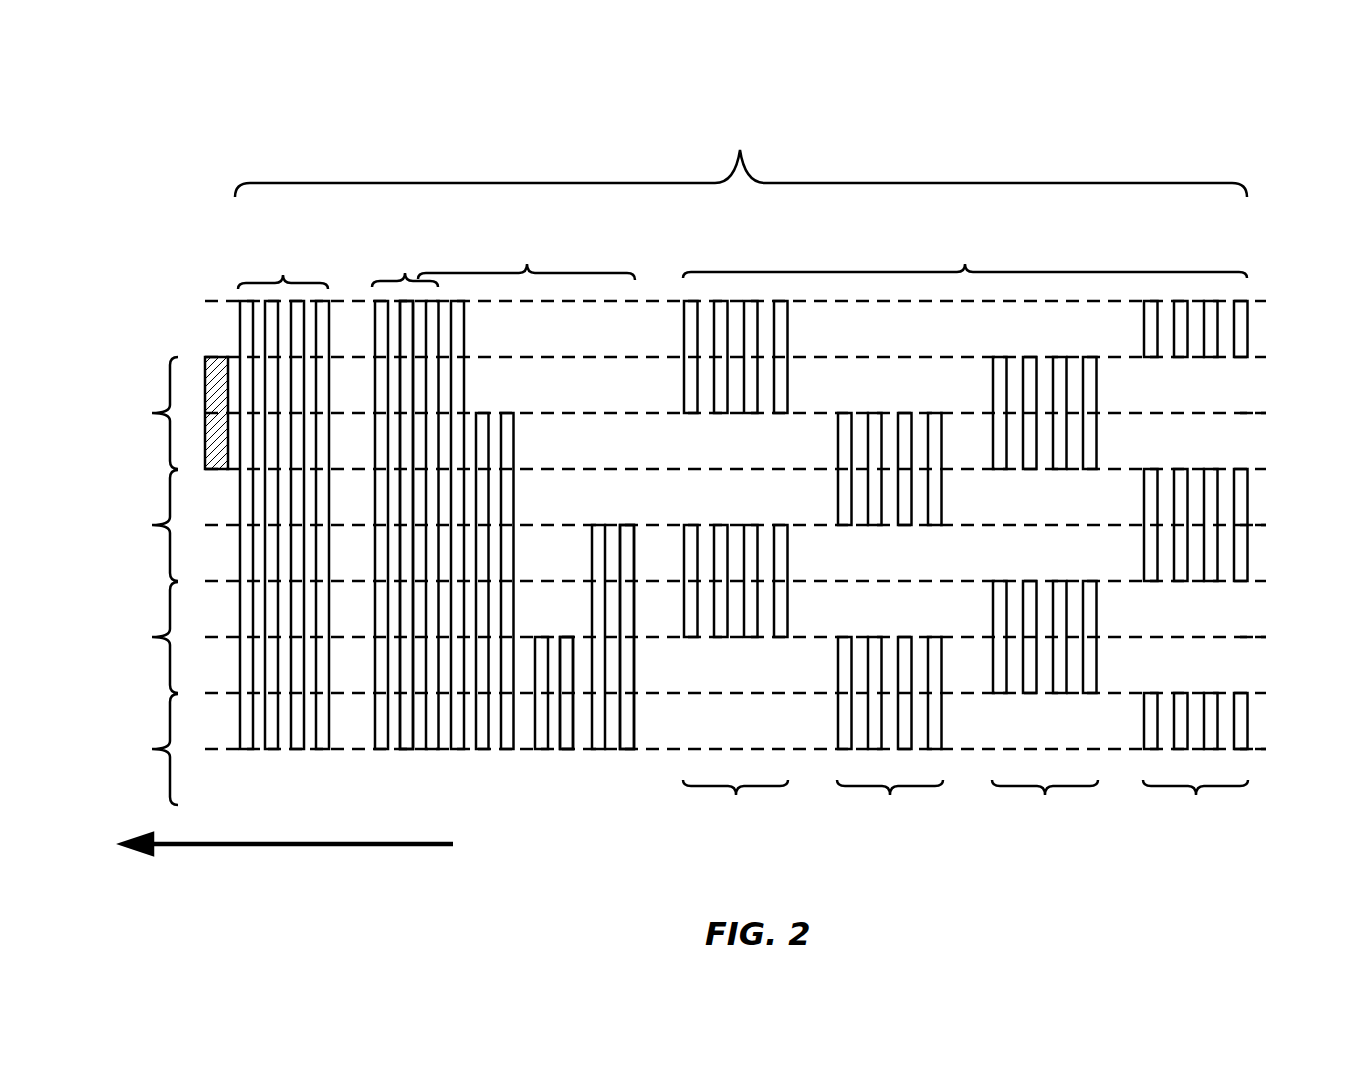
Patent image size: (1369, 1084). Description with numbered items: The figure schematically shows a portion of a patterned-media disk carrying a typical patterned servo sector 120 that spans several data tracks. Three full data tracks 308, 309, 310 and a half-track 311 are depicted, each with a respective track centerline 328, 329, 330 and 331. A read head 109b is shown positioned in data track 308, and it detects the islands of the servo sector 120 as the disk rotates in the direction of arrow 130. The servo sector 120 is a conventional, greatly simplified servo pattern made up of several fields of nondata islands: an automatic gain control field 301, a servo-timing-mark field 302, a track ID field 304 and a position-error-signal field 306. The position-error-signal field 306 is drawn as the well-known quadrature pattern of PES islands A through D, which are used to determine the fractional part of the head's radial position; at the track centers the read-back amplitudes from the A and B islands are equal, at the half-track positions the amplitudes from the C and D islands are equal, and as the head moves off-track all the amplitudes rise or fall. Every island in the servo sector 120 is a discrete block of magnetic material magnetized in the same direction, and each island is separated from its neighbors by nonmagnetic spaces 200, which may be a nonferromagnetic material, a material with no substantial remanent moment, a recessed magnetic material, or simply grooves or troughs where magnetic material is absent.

The patterned servo sector 120 is at (740, 152).
The automatic gain control (AGC) field 301 is at (238, 282).
The servo-timing-mark (STM) field 302 is at (372, 280).
The track ID (TID) field 304 is at (608, 273).
The position-error-signal (PES) field 306 is at (778, 268).
The read head 109b is at (217, 357).
The data track 308 is at (139, 413).
The data track 309 is at (139, 525).
The data track 310 is at (139, 637).
The half-track 311 is at (139, 749).
The track centerline 328 is at (1261, 413).
The track centerline 329 is at (1261, 525).
The track centerline 330 is at (1261, 637).
The track centerline 331 is at (1261, 749).
The nonmagnetic spaces 200 is at (576, 430).
The arrow 130 is at (238, 847).